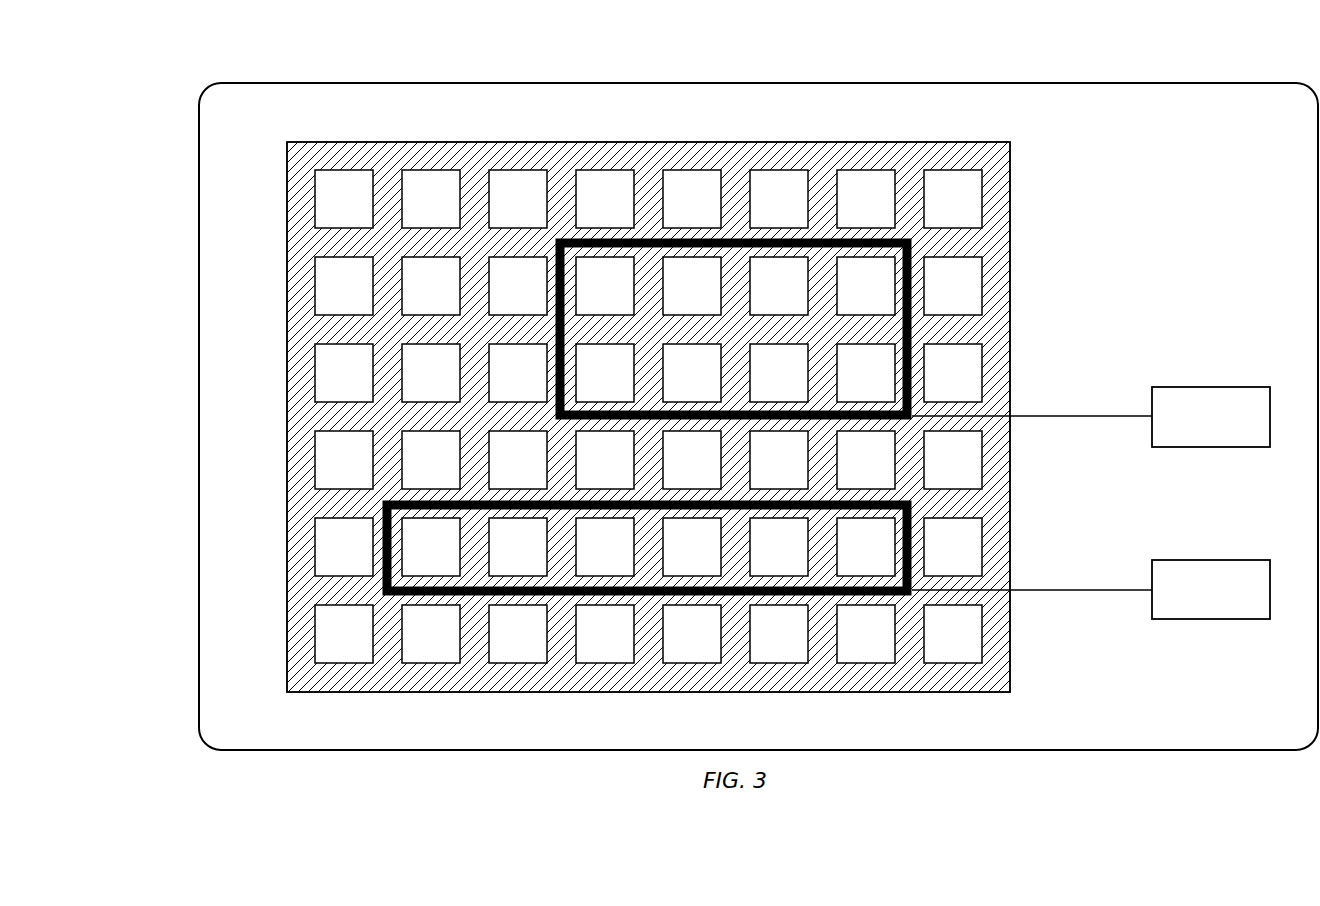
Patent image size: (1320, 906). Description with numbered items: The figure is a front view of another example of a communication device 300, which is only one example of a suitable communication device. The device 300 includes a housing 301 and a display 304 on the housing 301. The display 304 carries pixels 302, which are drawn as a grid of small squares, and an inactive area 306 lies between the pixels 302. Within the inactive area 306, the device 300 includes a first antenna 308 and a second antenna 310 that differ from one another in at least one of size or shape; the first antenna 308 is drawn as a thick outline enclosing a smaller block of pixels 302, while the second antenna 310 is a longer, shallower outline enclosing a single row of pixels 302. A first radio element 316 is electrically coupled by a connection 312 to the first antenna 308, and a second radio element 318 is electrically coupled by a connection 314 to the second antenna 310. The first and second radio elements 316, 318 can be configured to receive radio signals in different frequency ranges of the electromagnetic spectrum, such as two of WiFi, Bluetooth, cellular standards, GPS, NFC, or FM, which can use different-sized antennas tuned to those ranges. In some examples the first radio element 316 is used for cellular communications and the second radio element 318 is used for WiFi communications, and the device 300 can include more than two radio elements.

The communication device 300 is at (420, 62).
The housing 301 is at (1167, 85).
The pixels 302 is at (648, 416).
The display 304 is at (345, 140).
The inactive area 306 is at (287, 243).
The first antenna 308 is at (737, 238).
The second antenna 310 is at (732, 596).
The connection 312 is at (1054, 413).
The connection 314 is at (1054, 587).
The first radio element 316 is at (1214, 386).
The second radio element 318 is at (1214, 559).